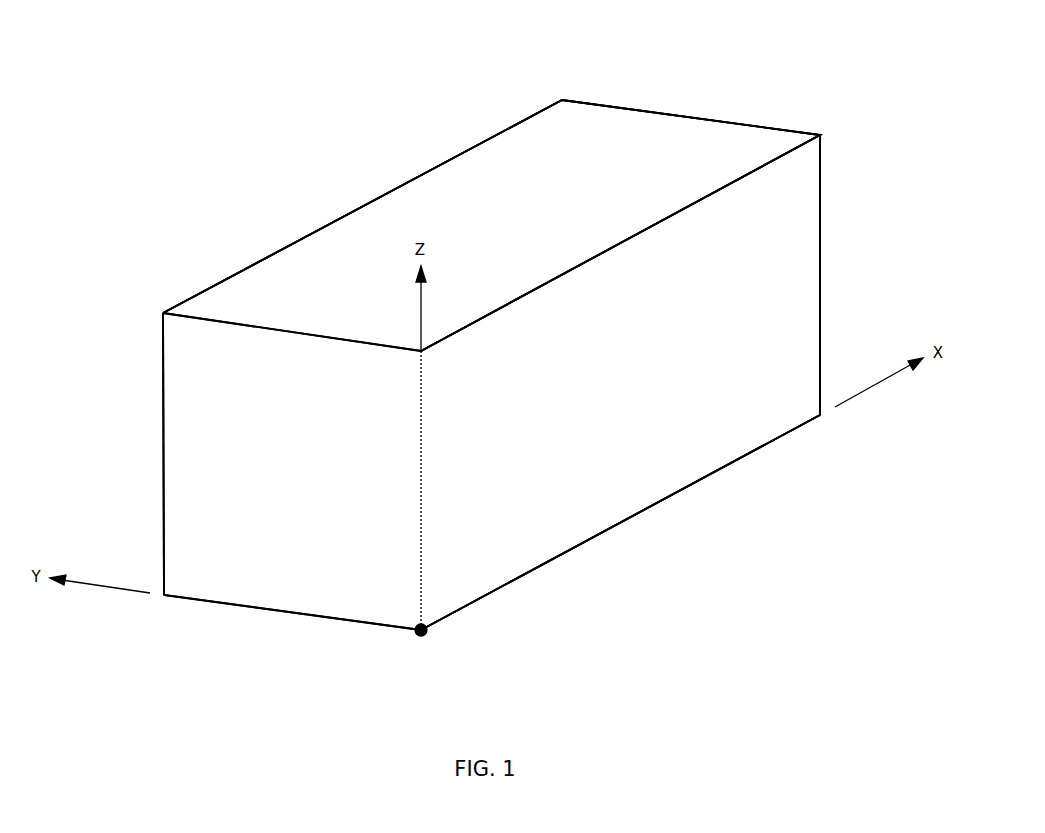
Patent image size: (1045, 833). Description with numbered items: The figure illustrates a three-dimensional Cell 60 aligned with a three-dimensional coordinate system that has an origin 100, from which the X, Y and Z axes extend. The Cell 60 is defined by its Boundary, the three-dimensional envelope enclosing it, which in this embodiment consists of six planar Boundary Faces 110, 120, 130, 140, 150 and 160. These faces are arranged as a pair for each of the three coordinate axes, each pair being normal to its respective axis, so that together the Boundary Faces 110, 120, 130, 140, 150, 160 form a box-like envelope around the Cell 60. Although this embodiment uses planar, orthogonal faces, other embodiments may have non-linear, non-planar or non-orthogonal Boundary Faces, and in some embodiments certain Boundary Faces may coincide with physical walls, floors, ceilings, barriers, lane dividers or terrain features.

The Cell 60 is at (553, 70).
The origin 100 is at (416, 645).
The Boundary Face 110 is at (637, 513).
The Boundary Face 120 is at (668, 140).
The Boundary Face 130 is at (235, 548).
The Boundary Face 140 is at (770, 130).
The Boundary Face 150 is at (382, 195).
The Boundary Face 160 is at (787, 302).